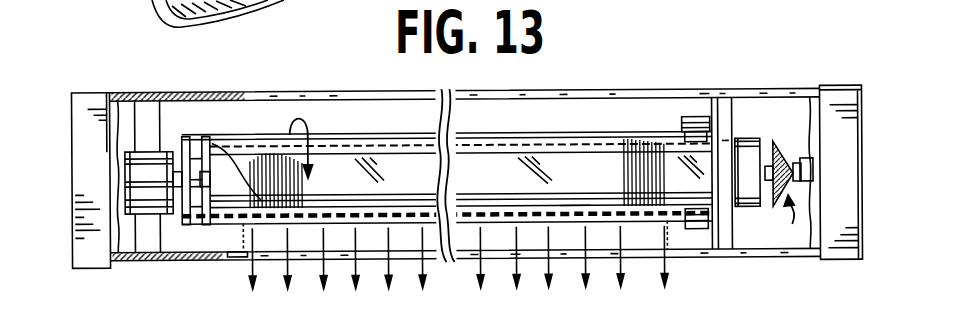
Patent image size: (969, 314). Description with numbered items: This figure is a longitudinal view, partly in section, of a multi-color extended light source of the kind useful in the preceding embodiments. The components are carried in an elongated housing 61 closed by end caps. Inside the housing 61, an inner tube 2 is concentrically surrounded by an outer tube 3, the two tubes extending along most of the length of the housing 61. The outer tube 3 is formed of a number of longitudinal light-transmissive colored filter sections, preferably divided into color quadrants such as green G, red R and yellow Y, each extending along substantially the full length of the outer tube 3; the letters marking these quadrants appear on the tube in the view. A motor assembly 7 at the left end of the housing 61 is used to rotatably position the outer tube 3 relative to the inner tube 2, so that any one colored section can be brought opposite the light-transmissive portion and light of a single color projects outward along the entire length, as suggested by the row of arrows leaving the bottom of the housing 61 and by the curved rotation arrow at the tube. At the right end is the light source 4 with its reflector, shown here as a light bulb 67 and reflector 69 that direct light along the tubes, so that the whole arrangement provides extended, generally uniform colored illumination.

The inner tube 2 is at (220, 222).
The outer tube 3 is at (577, 133).
The light source 4 is at (785, 219).
The motor assembly 7 is at (133, 173).
The housing 61 is at (752, 72).
The light bulb 67 is at (777, 165).
The reflector 69 is at (795, 147).
The red color quadrant R is at (381, 133).
The yellow color quadrant Y is at (461, 168).
The green color quadrant G is at (574, 216).